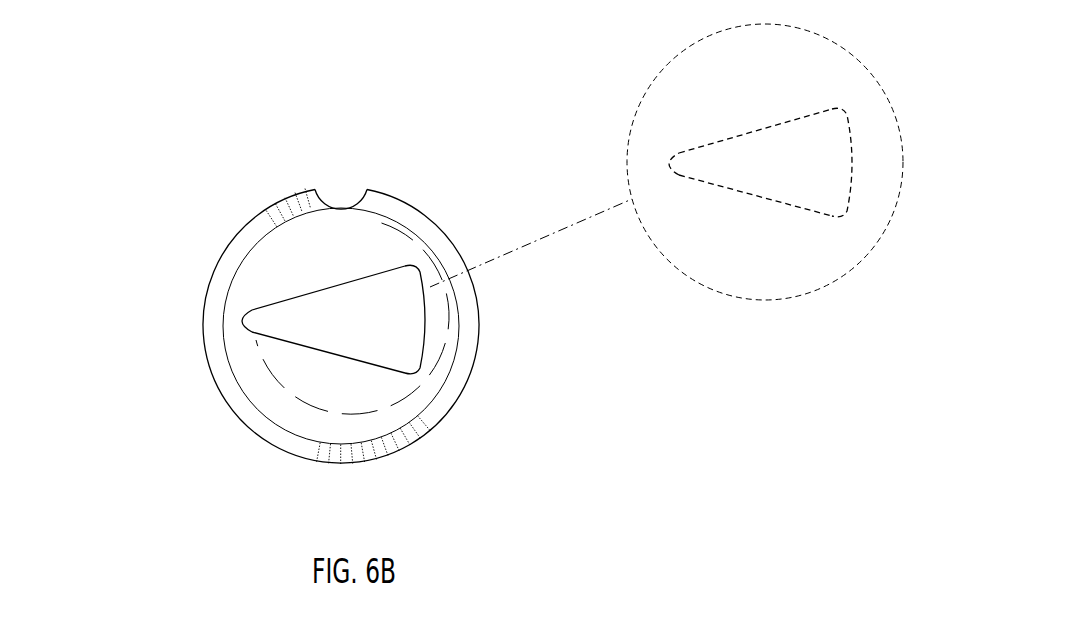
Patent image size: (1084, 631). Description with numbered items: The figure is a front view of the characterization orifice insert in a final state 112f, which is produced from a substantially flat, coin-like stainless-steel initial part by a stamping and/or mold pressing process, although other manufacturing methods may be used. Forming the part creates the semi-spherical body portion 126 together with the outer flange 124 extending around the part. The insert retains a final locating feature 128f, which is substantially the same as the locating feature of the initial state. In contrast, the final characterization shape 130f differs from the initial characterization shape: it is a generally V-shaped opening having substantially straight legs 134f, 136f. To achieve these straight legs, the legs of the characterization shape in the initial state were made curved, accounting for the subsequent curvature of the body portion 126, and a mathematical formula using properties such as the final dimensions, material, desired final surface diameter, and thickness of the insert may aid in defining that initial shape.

The characterization orifice insert in a final state 112f is at (420, 170).
The outer flange 124 is at (462, 410).
The semi-spherical body portion 126 is at (253, 275).
The final locating feature 128f is at (333, 187).
The final characterization shape 130f is at (668, 133).
The substantially straight leg 134f is at (762, 213).
The substantially straight leg 136f is at (758, 118).